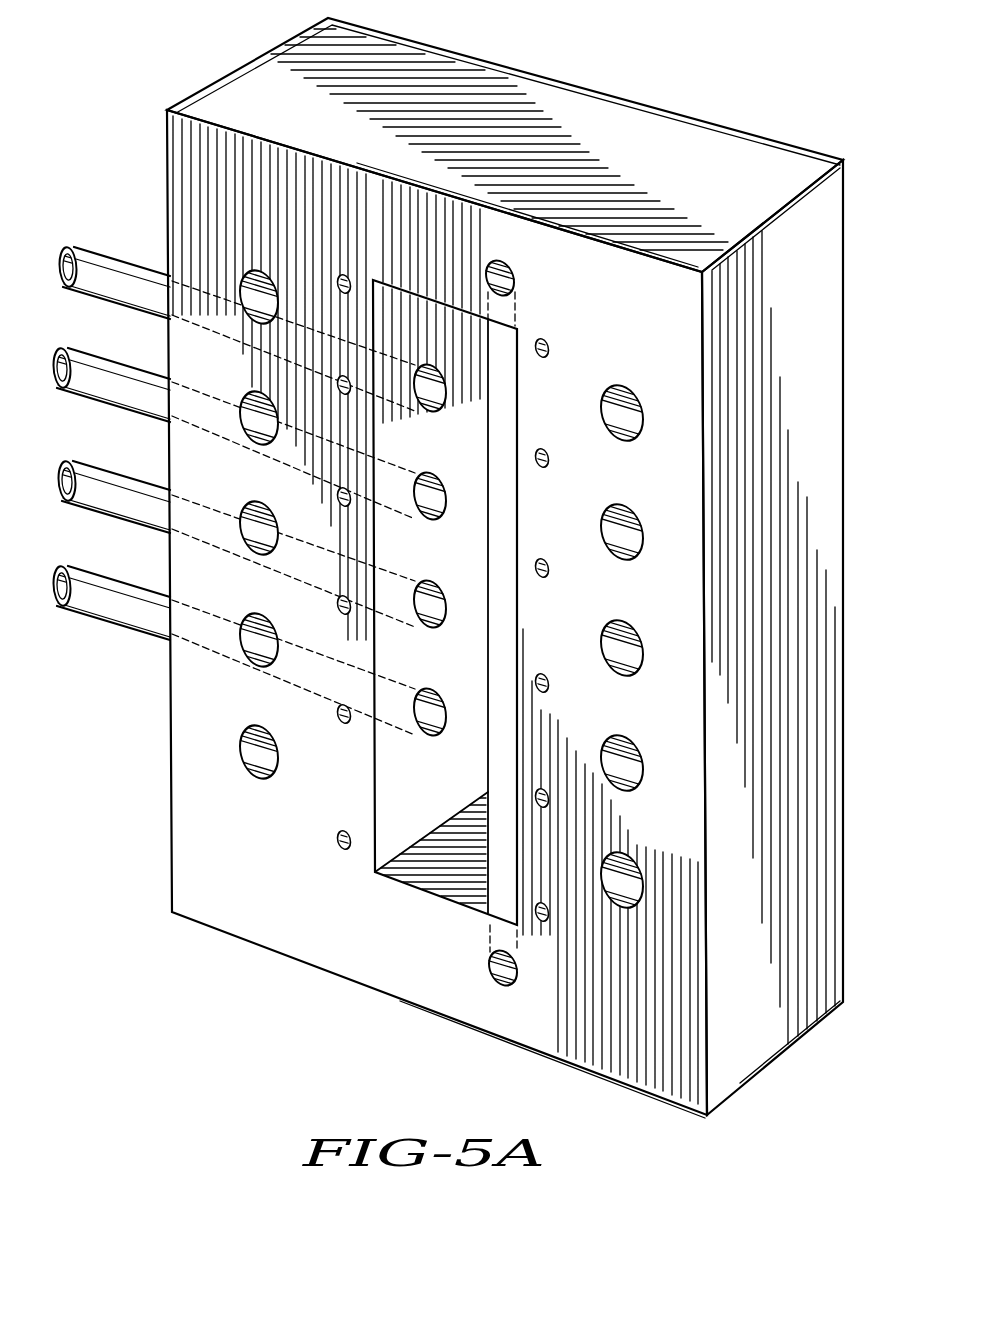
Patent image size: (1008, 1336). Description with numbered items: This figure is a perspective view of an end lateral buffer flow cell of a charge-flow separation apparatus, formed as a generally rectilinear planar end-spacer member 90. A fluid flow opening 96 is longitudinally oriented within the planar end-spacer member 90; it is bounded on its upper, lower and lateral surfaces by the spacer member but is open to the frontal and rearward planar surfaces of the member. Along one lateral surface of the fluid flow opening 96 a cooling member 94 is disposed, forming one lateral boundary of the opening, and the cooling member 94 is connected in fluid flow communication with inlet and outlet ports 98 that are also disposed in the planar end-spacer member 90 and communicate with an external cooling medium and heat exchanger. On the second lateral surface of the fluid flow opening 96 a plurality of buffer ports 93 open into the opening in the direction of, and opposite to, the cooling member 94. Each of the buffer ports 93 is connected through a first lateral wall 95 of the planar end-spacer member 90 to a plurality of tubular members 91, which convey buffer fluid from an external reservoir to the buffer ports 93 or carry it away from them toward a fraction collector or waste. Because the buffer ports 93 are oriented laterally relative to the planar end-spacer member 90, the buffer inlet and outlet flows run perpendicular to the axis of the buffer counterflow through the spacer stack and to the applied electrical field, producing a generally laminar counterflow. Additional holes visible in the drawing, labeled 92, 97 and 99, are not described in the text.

The planar end-spacer member 90 is at (531, 568).
The tubular members 91 is at (135, 337).
The manifold block 92 is at (822, 238).
The buffer ports 93 is at (438, 517).
The cooling member 94 is at (502, 822).
The first lateral wall 95 is at (190, 712).
The fluid flow opening 96 is at (432, 778).
The small holes 97 is at (548, 574).
The inlet and outlet ports 98 is at (512, 276).
The large holes 99 is at (246, 276).